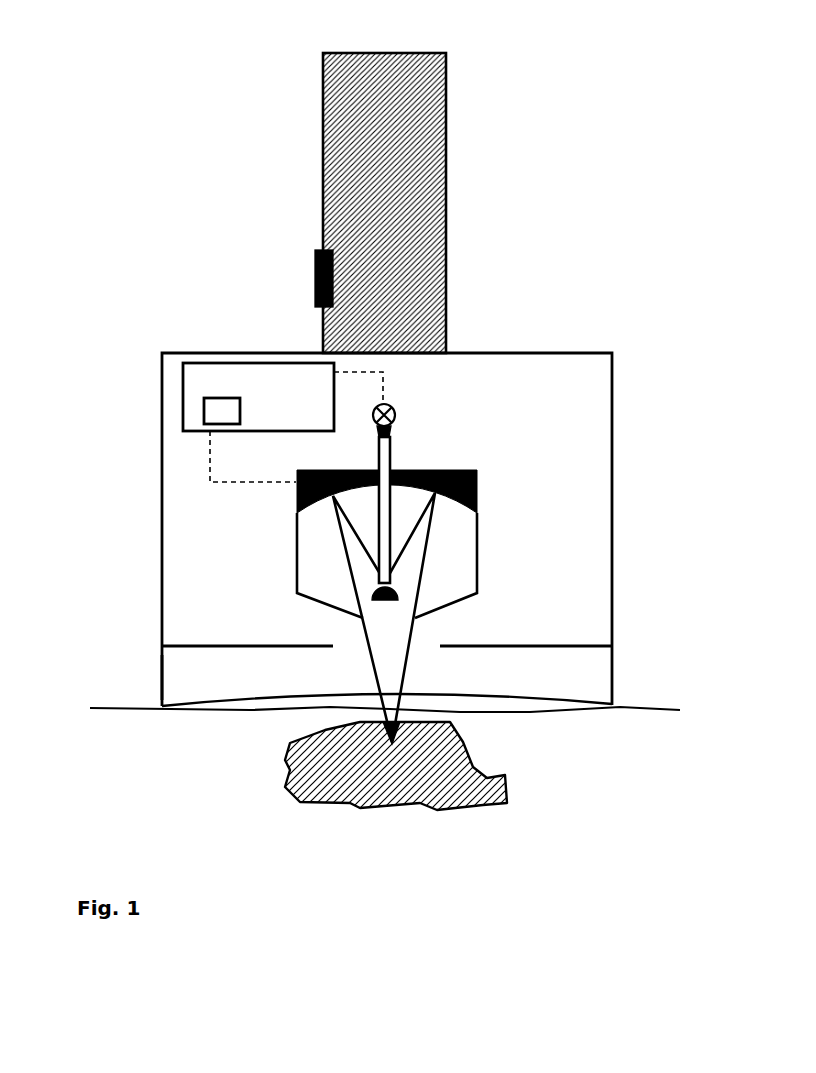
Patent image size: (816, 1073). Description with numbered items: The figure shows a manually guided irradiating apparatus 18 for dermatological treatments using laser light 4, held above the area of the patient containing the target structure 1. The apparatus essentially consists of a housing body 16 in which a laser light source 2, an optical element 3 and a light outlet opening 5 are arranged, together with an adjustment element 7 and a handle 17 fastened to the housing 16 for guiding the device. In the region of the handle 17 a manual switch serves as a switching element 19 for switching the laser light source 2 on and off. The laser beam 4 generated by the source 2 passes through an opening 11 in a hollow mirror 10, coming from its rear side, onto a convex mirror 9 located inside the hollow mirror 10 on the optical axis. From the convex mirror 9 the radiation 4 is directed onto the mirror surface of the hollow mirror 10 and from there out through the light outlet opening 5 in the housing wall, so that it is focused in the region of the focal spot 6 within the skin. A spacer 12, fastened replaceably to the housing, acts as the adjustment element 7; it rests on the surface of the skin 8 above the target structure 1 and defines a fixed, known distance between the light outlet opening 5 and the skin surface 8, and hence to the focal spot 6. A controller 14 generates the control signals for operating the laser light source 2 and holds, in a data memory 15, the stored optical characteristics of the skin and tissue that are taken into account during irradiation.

The target structure 1 is at (505, 777).
The laser light source 2 is at (394, 407).
The optical element 3 is at (291, 541).
The laser radiation 4 is at (400, 560).
The light outlet opening 5 is at (353, 647).
The focal spot 6 is at (386, 740).
The adjustment element 7 is at (131, 680).
The surface of the skin 8 is at (143, 708).
The convex mirror 9 is at (376, 588).
The hollow mirror 10 is at (475, 500).
The opening 11 is at (396, 470).
The spacer 12 is at (160, 670).
The controller 14 is at (238, 380).
The data memory 15 is at (213, 410).
The housing body 16 is at (555, 353).
The handle 17 is at (422, 195).
The irradiating apparatus 18 is at (186, 238).
The switching element 19 is at (315, 255).